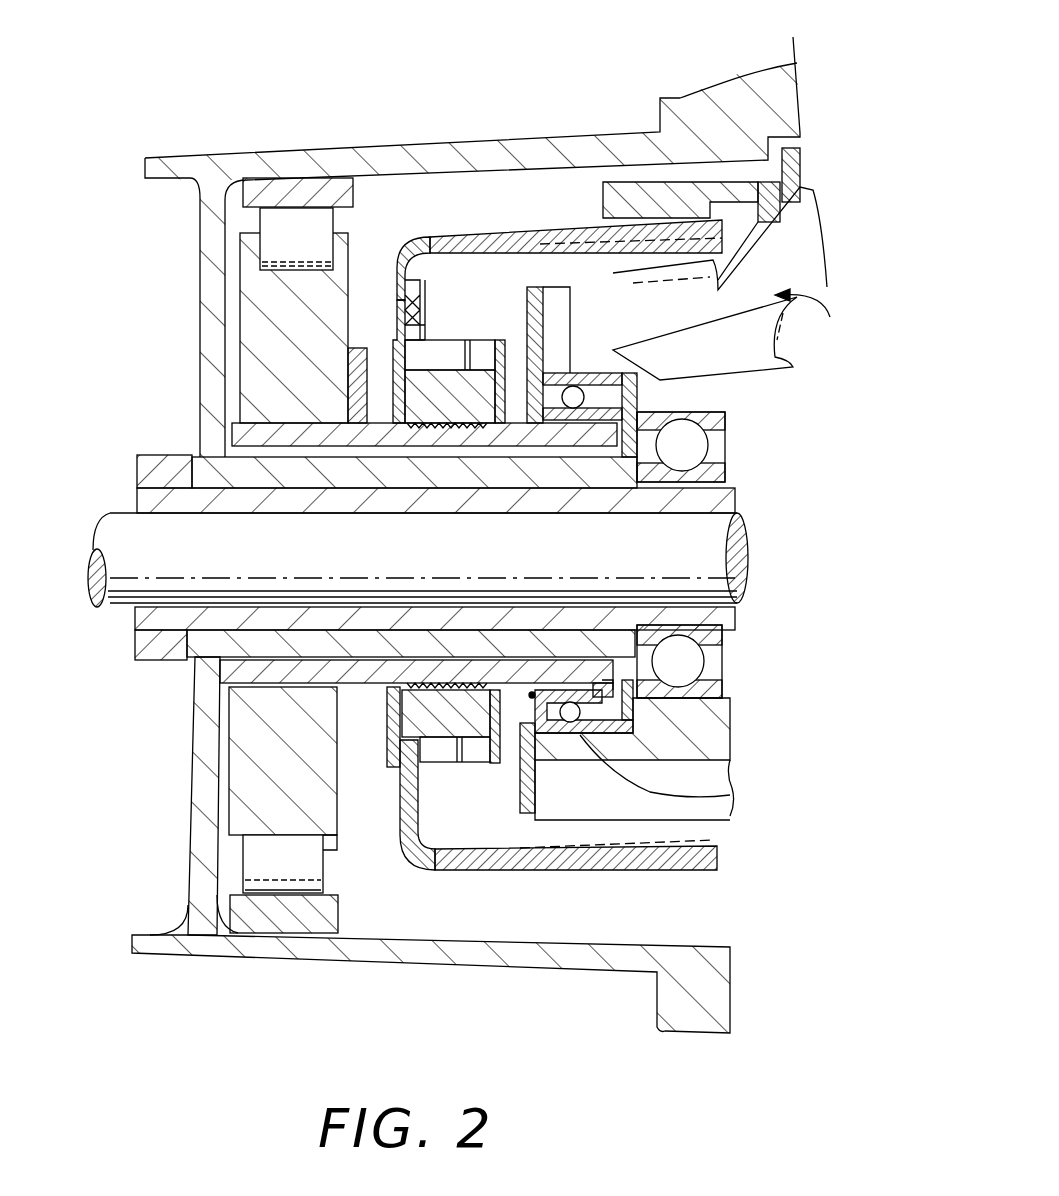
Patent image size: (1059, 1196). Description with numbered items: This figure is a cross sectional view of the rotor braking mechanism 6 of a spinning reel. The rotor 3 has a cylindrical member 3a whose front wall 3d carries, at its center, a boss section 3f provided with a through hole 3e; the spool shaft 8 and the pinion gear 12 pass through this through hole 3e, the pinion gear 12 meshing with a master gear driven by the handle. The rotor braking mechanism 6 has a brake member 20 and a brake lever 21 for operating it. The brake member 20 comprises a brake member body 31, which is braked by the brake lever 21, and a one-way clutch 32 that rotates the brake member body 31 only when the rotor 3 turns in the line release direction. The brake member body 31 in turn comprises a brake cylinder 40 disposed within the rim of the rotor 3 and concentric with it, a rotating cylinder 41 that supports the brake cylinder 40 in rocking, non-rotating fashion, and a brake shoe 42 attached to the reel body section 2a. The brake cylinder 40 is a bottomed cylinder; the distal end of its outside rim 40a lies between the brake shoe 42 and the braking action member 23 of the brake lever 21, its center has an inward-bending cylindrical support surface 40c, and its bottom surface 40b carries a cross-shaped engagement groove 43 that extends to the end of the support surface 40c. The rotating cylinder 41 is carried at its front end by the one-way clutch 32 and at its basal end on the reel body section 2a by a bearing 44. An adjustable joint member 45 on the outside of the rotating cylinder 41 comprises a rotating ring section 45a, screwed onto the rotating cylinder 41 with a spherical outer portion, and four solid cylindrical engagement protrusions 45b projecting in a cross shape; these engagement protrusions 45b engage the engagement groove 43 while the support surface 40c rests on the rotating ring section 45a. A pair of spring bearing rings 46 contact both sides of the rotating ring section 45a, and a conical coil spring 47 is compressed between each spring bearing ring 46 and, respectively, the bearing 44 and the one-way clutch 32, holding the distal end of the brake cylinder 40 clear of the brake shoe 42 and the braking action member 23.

The reel body section 2a is at (712, 737).
The rotor 3 is at (345, 138).
The cylindrical member 3a is at (442, 158).
The front wall 3d is at (212, 280).
The through hole 3e is at (243, 495).
The boss section 3f is at (205, 475).
The rotor braking mechanism 6 is at (452, 832).
The spool shaft 8 is at (723, 558).
The pinion gear 12 is at (697, 500).
The brake member 20 is at (533, 170).
The brake lever 21 is at (795, 350).
The braking action member 23 is at (717, 287).
The brake member body 31 is at (408, 196).
The one-way clutch 32 is at (237, 317).
The brake cylinder 40 is at (468, 235).
The outside rim 40a is at (537, 237).
The bottom surface 40b is at (403, 273).
The support surface 40c is at (470, 752).
The rotating cylinder 41 is at (458, 426).
The brake shoe 42 is at (630, 208).
The engagement groove 43 is at (400, 775).
The bearing 44 is at (733, 793).
The adjustable joint member 45 is at (433, 340).
The rotating ring section 45a is at (510, 378).
The engagement protrusions 45b is at (425, 335).
The spring bearing rings 46 is at (530, 414).
The conical coil spring 47 is at (378, 398).